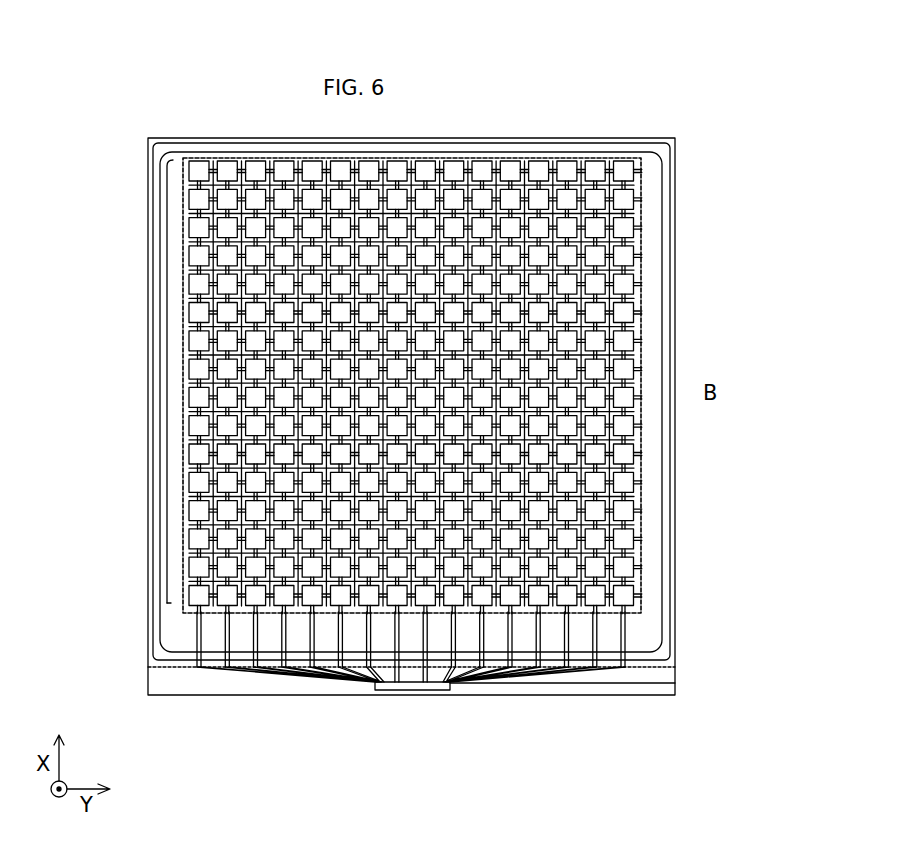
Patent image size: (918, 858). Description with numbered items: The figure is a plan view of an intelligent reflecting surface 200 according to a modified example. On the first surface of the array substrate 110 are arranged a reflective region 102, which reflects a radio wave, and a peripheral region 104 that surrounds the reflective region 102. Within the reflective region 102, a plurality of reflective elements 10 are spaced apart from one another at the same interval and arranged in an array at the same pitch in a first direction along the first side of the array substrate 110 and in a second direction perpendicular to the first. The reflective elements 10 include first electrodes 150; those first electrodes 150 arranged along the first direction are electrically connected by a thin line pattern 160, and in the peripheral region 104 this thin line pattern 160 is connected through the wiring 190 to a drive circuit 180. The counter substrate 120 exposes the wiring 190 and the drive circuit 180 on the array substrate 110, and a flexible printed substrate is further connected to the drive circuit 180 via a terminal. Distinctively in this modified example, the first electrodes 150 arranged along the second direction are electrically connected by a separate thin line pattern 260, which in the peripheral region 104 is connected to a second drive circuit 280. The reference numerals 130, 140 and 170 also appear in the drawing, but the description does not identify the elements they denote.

The intelligent reflecting surface 200 is at (188, 116).
The array substrate 110 is at (673, 688).
The counter substrate 120 is at (672, 660).
The light emitting element layer 130 is at (652, 627).
The encapsulation layer 140 is at (673, 585).
The first electrode 150 is at (623, 515).
The thin line pattern 160 is at (625, 465).
The second sensing electrode 170 is at (655, 425).
The drive circuit 180 is at (446, 695).
The wiring 190 is at (478, 695).
The reflective element 10 is at (485, 387).
The reflective region 102 is at (648, 190).
The peripheral region 104 is at (683, 232).
The thin line pattern 260 is at (175, 288).
The drive circuit 280 is at (175, 318).